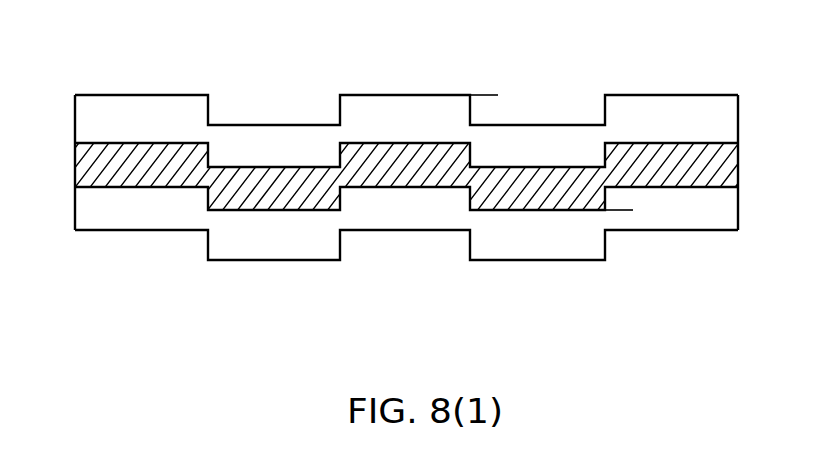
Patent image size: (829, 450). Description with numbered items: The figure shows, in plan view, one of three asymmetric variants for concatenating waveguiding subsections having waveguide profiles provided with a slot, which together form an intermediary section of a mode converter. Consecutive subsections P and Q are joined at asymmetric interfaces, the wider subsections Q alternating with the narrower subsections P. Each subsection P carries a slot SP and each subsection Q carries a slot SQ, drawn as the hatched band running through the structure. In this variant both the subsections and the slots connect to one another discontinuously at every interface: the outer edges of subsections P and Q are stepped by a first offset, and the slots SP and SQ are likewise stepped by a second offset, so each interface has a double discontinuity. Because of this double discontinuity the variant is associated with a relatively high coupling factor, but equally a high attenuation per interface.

The subsection Q is at (75, 84).
The subsection P is at (205, 273).
The slot of subsection P SP is at (293, 167).
The slot of subsection Q SQ is at (393, 188).